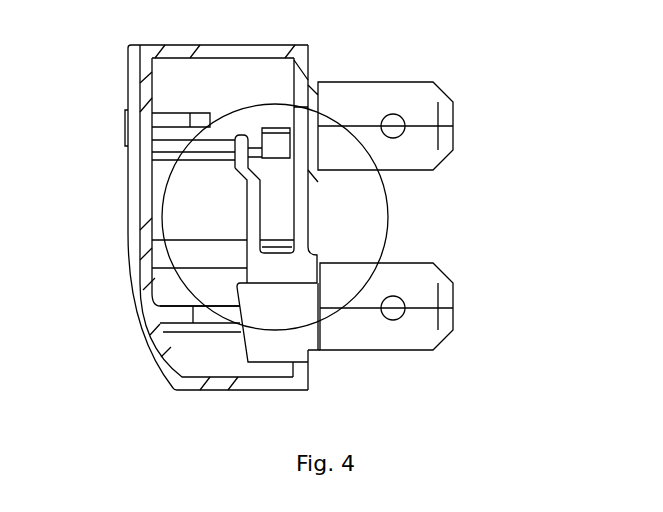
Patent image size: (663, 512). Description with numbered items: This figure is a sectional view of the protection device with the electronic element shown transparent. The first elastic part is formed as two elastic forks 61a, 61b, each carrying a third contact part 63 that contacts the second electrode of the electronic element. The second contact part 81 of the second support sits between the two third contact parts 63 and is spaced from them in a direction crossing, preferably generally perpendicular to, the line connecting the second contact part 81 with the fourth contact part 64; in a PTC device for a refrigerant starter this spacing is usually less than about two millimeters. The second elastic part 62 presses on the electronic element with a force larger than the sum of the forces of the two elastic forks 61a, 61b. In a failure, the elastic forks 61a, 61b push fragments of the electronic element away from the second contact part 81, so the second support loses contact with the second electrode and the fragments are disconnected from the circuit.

The elastic fork 61a is at (255, 230).
The elastic fork 61b is at (302, 227).
The second elastic part 62 is at (292, 340).
The third contact part 63 is at (313, 155).
The fourth contact part 64 is at (263, 290).
The second contact part 81 is at (278, 152).